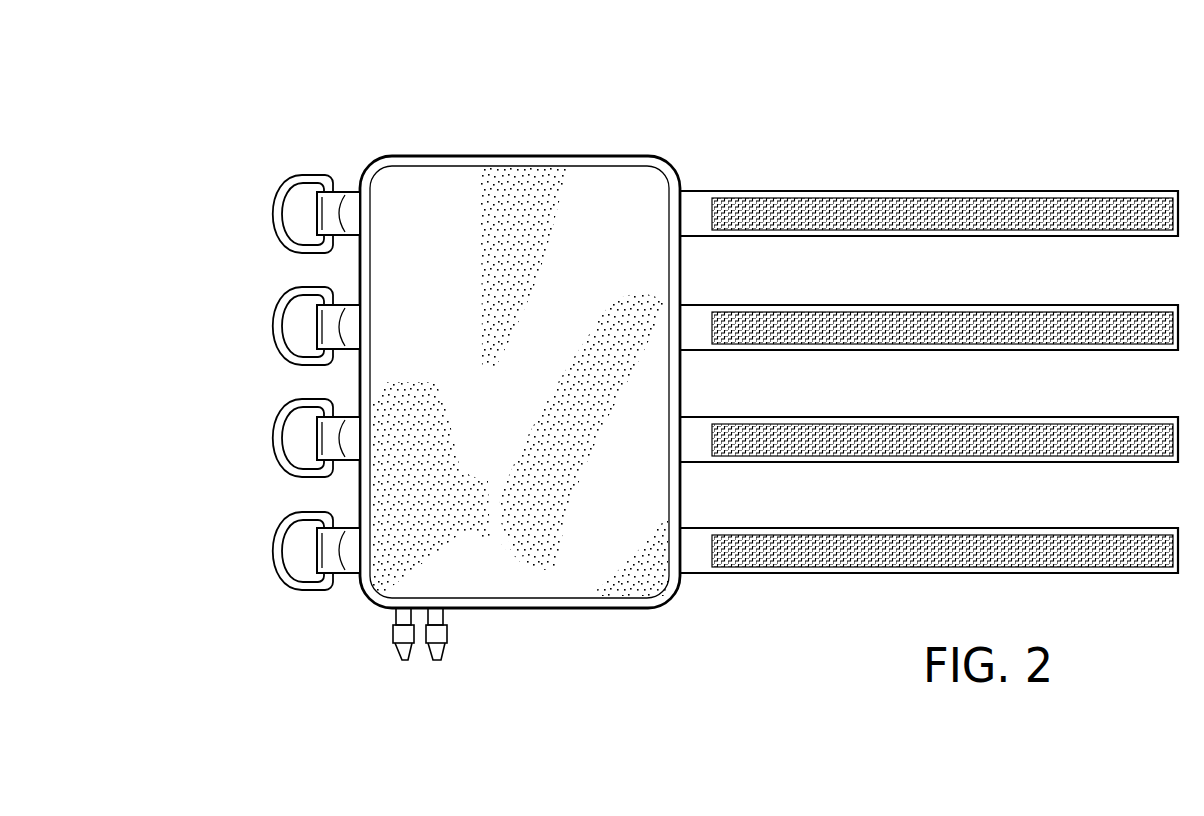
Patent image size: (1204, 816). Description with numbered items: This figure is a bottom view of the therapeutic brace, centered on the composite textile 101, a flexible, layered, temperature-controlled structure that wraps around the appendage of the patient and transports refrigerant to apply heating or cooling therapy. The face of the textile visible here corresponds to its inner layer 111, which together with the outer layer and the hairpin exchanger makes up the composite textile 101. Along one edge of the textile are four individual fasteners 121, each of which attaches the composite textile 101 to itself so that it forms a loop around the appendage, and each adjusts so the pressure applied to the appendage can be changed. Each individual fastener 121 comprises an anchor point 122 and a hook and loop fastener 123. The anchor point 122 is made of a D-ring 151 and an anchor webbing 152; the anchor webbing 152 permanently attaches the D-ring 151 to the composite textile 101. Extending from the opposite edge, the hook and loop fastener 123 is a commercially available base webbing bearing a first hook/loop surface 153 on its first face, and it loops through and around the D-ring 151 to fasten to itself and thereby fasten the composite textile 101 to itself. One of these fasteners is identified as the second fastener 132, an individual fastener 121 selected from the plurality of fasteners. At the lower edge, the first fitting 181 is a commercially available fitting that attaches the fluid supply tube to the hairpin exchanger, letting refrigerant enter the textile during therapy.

The composite textile 101 is at (650, 155).
The inner layer 111 is at (600, 190).
The individual fastener 121 is at (268, 215).
The hook and loop fastener 123 is at (313, 180).
The D-ring 151 is at (278, 328).
The anchor webbing 152 is at (345, 304).
The anchor point 122 is at (922, 205).
The first hook/loop surface 153 is at (878, 320).
The first fitting 181 is at (404, 660).
The second fastener 132 is at (436, 660).